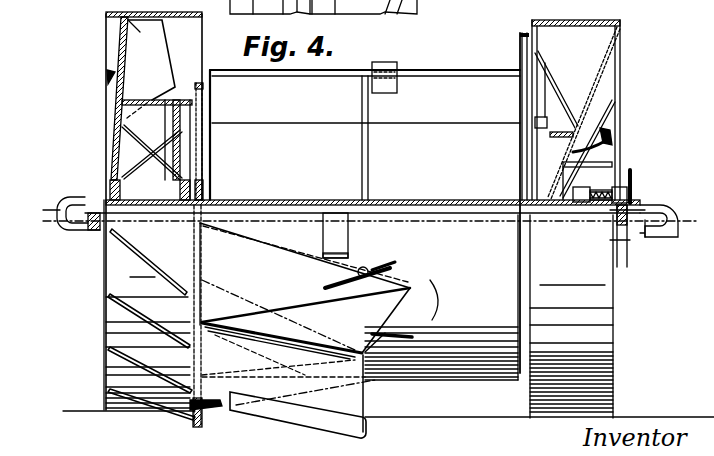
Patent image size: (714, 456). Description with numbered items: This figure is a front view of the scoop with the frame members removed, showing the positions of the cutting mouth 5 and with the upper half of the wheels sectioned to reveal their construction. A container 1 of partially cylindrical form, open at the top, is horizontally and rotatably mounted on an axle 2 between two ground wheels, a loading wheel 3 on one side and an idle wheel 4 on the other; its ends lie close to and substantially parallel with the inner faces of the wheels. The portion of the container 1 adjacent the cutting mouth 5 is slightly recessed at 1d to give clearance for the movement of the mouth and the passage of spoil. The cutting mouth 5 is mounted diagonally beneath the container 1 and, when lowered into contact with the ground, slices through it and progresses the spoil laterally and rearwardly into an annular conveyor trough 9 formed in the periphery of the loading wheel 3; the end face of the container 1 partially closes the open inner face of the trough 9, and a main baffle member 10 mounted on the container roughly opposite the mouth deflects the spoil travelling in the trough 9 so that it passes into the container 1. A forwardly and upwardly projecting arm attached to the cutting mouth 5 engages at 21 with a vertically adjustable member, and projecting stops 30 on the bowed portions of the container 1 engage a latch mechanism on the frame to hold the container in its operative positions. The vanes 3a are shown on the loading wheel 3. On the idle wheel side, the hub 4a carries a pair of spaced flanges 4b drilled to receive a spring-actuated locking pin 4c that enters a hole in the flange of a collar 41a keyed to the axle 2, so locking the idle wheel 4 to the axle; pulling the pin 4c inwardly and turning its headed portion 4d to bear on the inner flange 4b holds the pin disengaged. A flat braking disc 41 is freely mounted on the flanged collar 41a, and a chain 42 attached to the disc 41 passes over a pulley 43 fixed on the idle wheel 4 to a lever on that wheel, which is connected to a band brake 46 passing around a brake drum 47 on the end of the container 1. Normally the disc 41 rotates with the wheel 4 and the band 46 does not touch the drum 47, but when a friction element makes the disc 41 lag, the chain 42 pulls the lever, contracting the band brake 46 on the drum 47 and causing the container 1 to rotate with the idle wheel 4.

The container 1 is at (412, 70).
The recessed portion 1d is at (302, 306).
The axle 2 is at (664, 208).
The loading wheel 3 is at (106, 103).
The vanes of housing 3a is at (145, 204).
The idle wheel 4 is at (588, 20).
The hub 4a is at (556, 205).
The spaced flanges 4b is at (577, 210).
The locking pin 4c is at (593, 205).
The headed portion 4d is at (548, 177).
The cutting mouth 5 is at (355, 318).
The conveyor trough 9 is at (182, 95).
The main baffle member 10 is at (135, 52).
The engagement point of arm 21 is at (408, 284).
The projecting stops 30 is at (323, 250).
The braking disc 41 is at (628, 170).
The flanged collar 41a is at (631, 195).
The chain 42 is at (610, 154).
The pulley 43 is at (612, 142).
The band brake 46 is at (545, 110).
The brake drum 47 is at (537, 132).